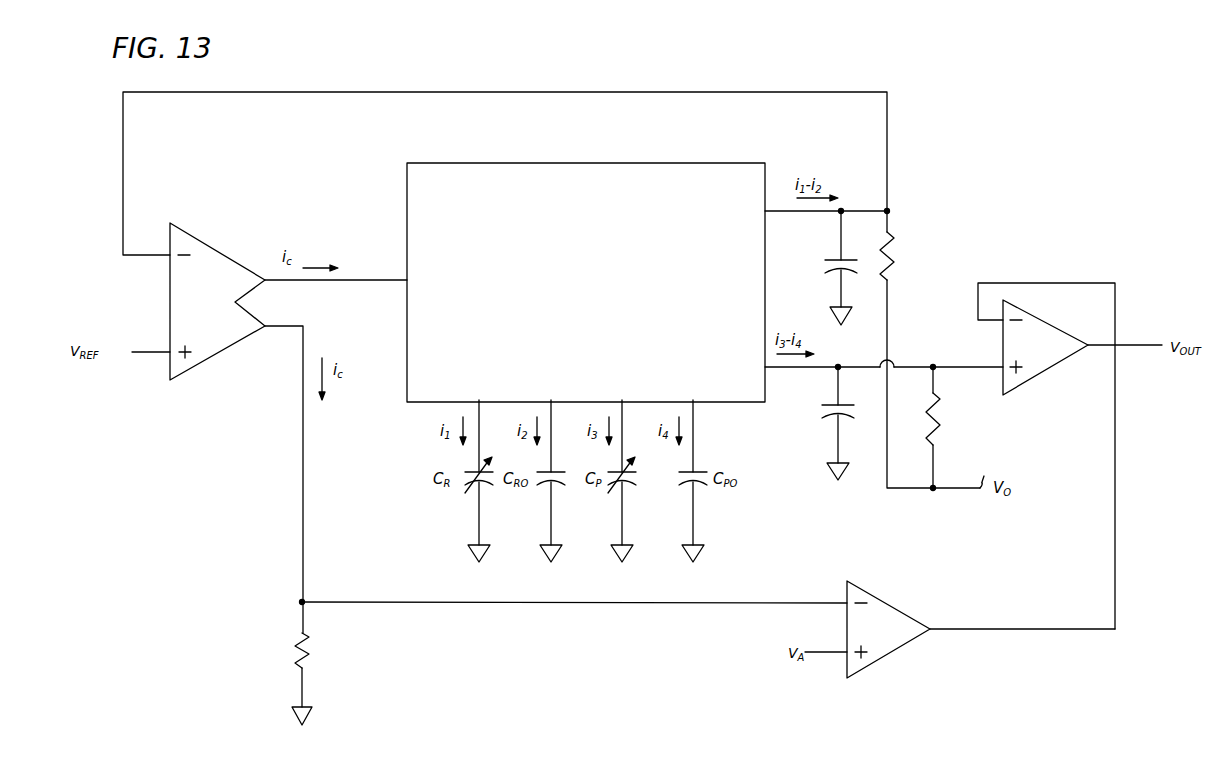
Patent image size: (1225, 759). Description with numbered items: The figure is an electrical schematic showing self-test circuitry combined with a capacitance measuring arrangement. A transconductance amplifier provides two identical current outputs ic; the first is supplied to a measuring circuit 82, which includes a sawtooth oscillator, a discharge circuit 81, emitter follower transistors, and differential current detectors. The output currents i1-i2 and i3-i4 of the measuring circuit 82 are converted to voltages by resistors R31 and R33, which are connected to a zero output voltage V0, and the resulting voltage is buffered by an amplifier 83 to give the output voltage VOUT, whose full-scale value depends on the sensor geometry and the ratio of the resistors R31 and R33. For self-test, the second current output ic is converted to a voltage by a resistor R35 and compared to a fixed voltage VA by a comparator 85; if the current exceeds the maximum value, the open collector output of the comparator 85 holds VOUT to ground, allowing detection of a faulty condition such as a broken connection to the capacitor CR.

The discharge circuit 81 is at (248, 218).
The measuring circuit 82 is at (677, 163).
The amplifier 83 is at (1053, 370).
The comparator 85 is at (883, 658).
The resistor R31 is at (893, 242).
The resistor R33 is at (940, 433).
The resistor R35 is at (308, 649).